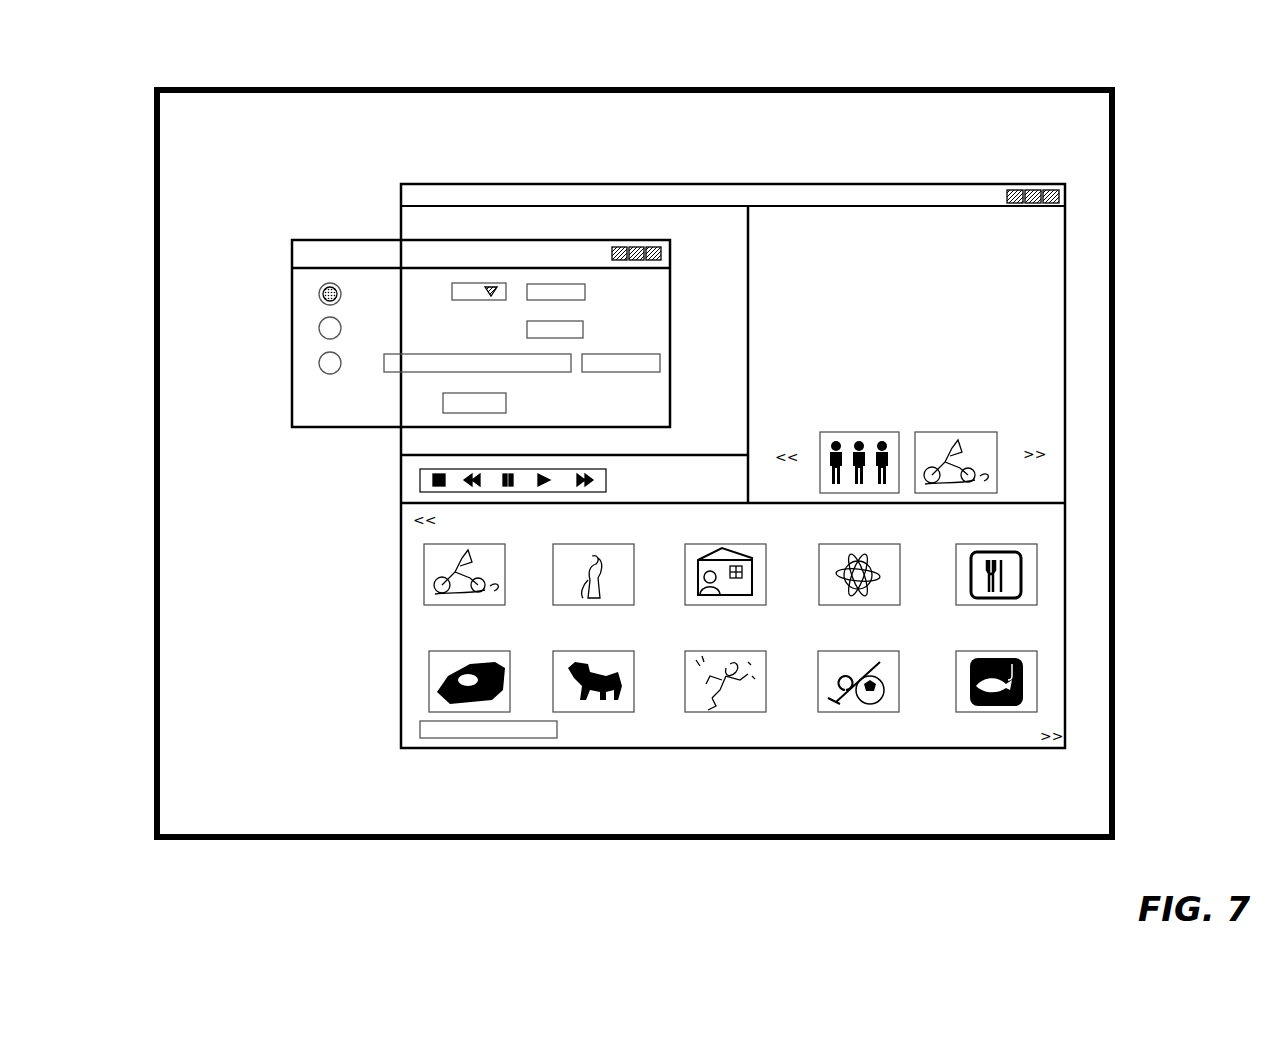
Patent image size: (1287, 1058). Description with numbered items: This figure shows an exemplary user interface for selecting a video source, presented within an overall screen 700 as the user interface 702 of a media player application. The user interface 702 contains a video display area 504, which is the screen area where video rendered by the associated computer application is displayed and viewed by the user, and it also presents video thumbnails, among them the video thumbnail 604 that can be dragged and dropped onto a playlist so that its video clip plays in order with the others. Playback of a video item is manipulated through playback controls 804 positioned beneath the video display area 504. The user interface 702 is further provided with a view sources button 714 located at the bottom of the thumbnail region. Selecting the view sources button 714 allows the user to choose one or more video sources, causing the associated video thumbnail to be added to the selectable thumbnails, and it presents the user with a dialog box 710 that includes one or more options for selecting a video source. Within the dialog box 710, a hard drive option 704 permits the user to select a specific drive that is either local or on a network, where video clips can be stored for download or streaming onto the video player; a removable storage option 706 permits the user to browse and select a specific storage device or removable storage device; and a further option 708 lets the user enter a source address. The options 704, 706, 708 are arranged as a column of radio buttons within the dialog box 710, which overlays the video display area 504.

The display screen 700 is at (638, 74).
The user interface 702 is at (843, 184).
The video display area 504 is at (401, 222).
The hard drive option 704 is at (319, 294).
The removable storage option 706 is at (319, 328).
The URL radio button 708 is at (319, 363).
The dialog box 710 is at (670, 357).
The playback controls 804 is at (606, 478).
The video thumbnail 604 is at (1065, 434).
The view sources button 714 is at (420, 729).